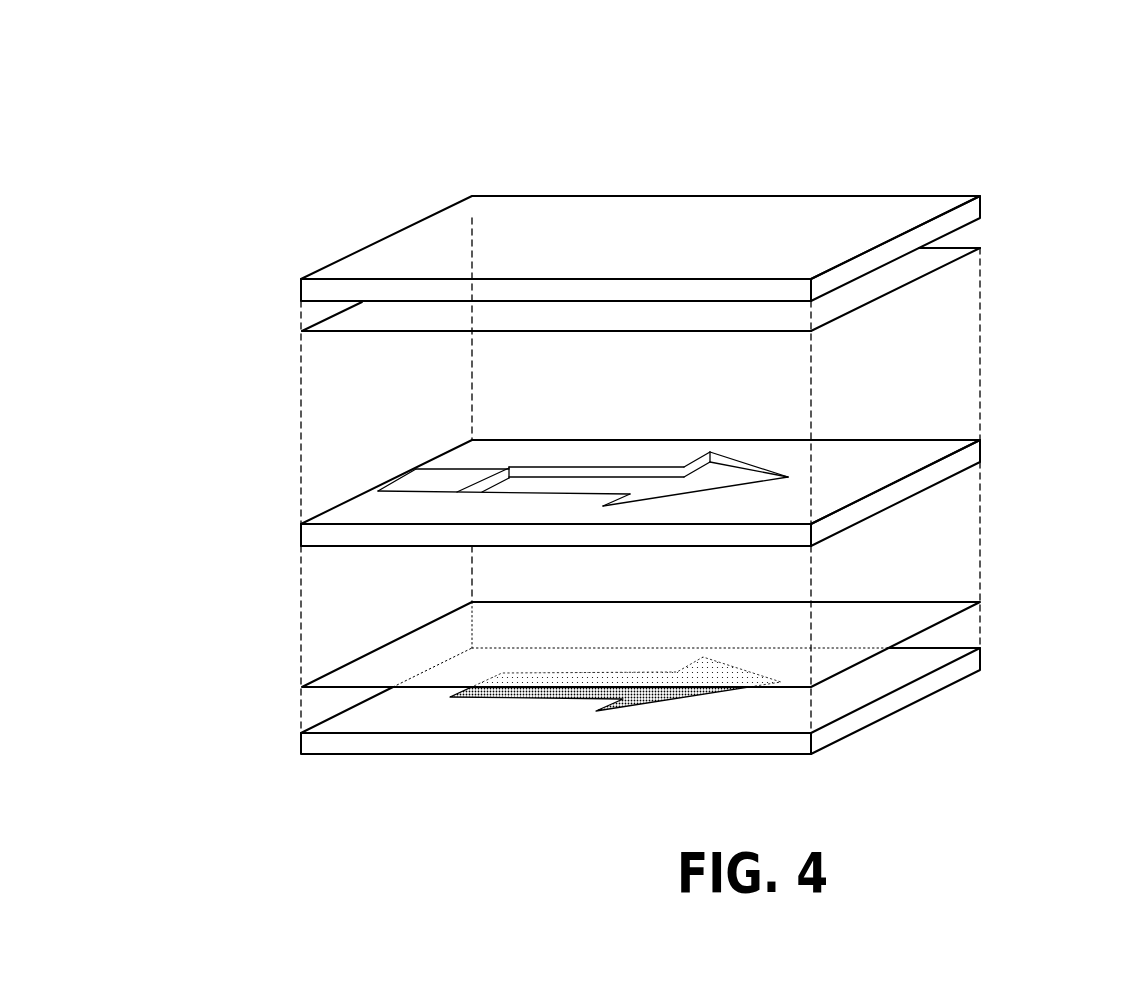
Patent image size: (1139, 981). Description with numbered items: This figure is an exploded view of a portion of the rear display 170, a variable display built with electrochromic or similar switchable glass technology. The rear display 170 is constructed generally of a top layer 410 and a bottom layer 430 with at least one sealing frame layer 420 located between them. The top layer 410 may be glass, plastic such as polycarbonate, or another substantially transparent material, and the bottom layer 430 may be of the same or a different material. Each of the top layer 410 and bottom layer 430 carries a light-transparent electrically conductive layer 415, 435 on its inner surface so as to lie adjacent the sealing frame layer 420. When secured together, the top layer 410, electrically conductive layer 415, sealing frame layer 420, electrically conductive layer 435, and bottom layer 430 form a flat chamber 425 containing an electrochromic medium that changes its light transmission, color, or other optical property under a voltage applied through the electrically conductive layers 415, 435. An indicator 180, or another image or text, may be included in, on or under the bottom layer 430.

The rear display 170 is at (240, 80).
The top layer 410 is at (982, 205).
The electrically conductive layer 415 is at (935, 273).
The sealing frame layer 420 is at (982, 455).
The flat chamber 425 is at (676, 458).
The electrically conductive layer 435 is at (947, 602).
The bottom layer 430 is at (982, 648).
The indicator 180 is at (605, 697).